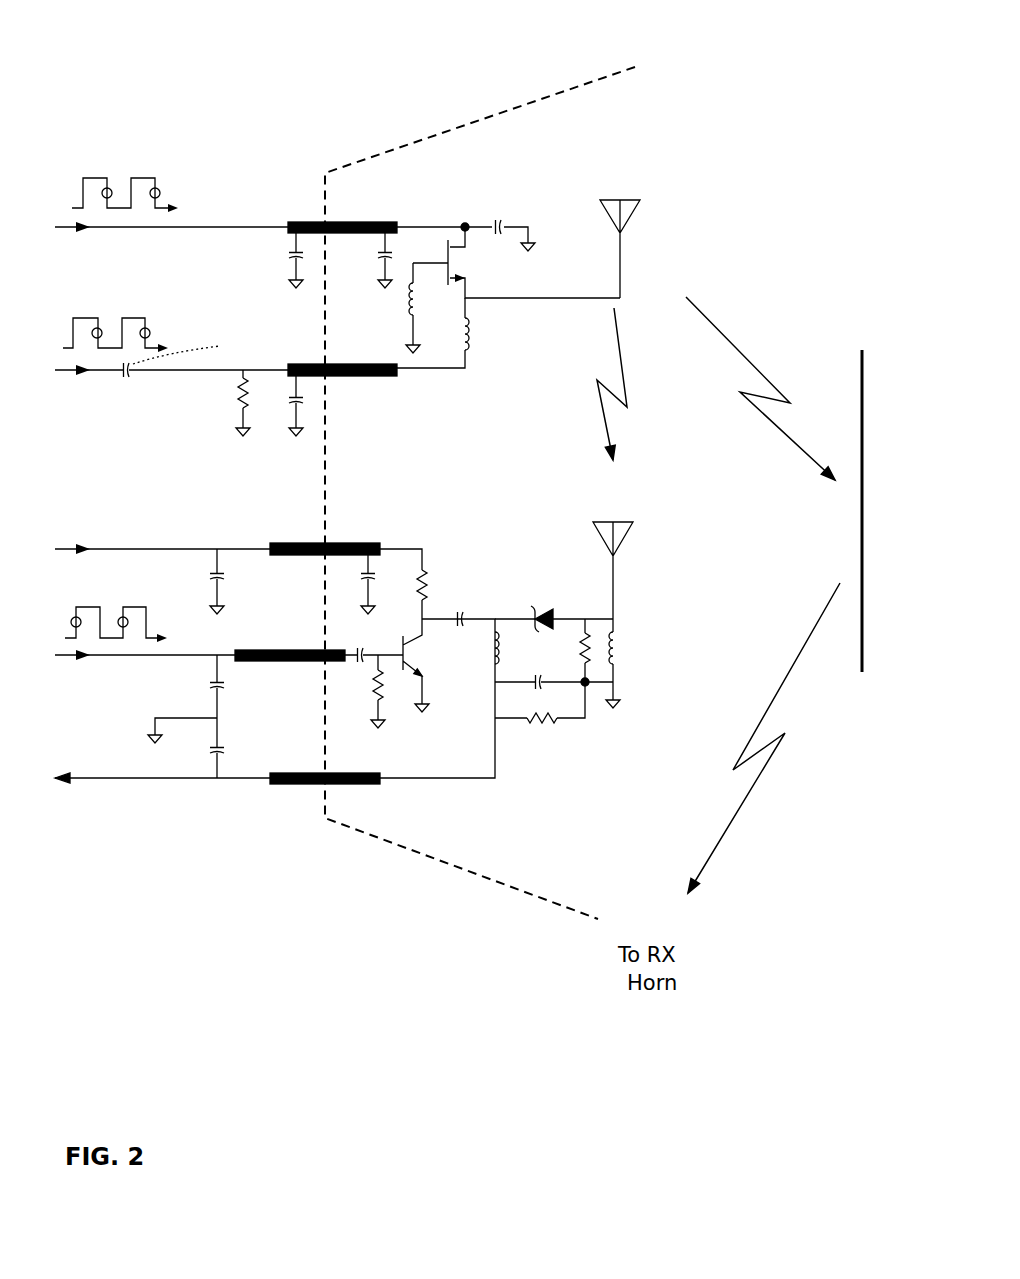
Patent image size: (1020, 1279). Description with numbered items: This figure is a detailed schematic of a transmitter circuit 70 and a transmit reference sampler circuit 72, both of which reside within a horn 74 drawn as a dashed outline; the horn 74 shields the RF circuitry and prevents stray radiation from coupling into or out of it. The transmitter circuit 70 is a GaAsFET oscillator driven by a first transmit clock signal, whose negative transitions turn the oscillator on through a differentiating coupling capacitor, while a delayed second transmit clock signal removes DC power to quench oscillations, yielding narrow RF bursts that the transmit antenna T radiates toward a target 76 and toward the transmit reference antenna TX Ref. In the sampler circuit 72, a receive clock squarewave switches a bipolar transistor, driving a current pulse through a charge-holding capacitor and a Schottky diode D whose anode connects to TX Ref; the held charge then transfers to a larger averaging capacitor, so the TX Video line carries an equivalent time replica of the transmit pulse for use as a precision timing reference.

The transmitter circuit 70 is at (505, 395).
The transmit reference sampler circuit 72 is at (542, 773).
The horn 74 is at (574, 77).
The target 76 is at (860, 385).